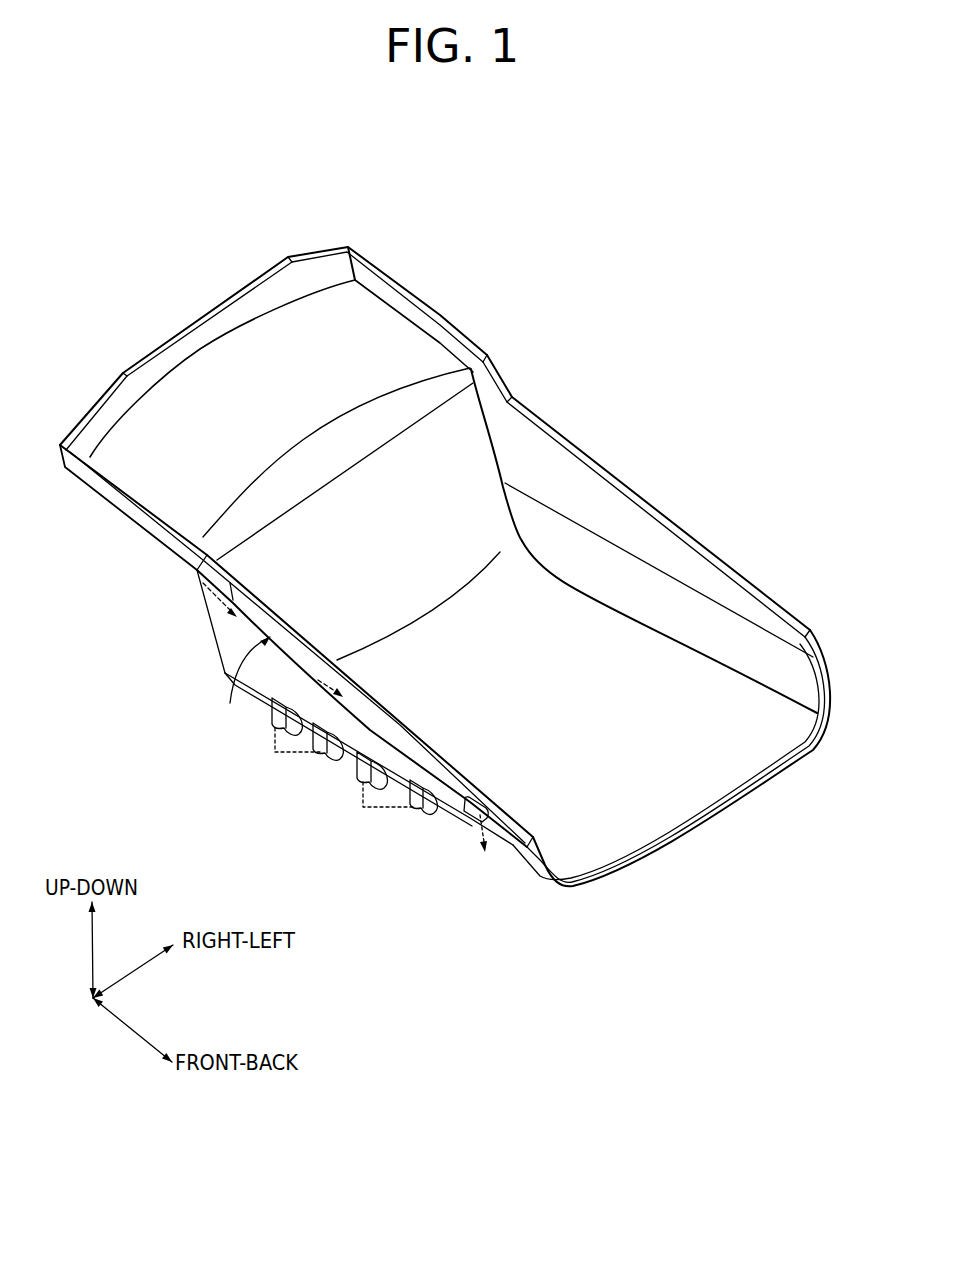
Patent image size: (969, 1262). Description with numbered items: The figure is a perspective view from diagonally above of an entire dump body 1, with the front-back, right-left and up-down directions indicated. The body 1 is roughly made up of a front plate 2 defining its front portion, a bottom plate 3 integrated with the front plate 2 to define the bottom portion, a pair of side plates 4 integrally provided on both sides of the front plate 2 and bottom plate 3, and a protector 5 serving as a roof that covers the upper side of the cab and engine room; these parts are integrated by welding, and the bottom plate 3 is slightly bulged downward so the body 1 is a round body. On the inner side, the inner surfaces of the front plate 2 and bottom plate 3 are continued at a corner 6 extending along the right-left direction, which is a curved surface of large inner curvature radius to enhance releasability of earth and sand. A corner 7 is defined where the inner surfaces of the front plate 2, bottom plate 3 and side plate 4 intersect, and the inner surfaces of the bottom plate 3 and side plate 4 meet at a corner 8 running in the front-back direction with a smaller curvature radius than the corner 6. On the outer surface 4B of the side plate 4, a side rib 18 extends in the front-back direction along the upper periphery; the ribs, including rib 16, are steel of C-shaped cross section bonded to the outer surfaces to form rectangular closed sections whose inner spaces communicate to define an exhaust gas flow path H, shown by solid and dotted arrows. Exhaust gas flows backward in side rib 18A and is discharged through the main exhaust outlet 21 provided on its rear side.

The dump body 1 is at (445, 548).
The front plate 2 is at (410, 507).
The bottom plate 3 is at (680, 790).
The side plate 4 is at (435, 601).
The outer surface of the side plate 4B is at (223, 640).
The protector 5 is at (387, 323).
The corner 6 is at (435, 605).
The corner 7 is at (523, 540).
The corner 8 is at (637, 617).
The rib 16 is at (278, 738).
The side rib 18 is at (692, 538).
The side rib 18A is at (423, 813).
The main exhaust outlet 21 is at (461, 823).
The exhaust gas flow path H is at (230, 703).